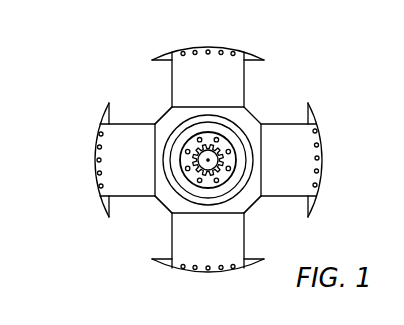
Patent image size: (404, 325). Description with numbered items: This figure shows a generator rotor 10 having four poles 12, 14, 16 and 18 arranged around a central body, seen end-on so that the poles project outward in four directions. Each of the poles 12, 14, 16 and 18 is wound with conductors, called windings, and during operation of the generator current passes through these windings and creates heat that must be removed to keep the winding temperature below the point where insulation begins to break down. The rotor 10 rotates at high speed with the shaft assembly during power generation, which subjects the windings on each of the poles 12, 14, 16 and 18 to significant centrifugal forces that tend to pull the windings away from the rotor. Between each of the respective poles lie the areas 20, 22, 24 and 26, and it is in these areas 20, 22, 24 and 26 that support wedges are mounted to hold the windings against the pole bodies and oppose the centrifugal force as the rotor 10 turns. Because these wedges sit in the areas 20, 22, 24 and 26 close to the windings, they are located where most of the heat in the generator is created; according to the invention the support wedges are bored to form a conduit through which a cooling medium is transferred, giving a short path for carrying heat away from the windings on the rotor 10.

The generator rotor 10 is at (219, 159).
The pole 12 is at (322, 158).
The pole 14 is at (228, 50).
The pole 16 is at (96, 158).
The pole 18 is at (229, 268).
The area between poles 20 is at (259, 103).
The area between poles 22 is at (138, 91).
The area between poles 24 is at (147, 226).
The area between poles 26 is at (270, 216).